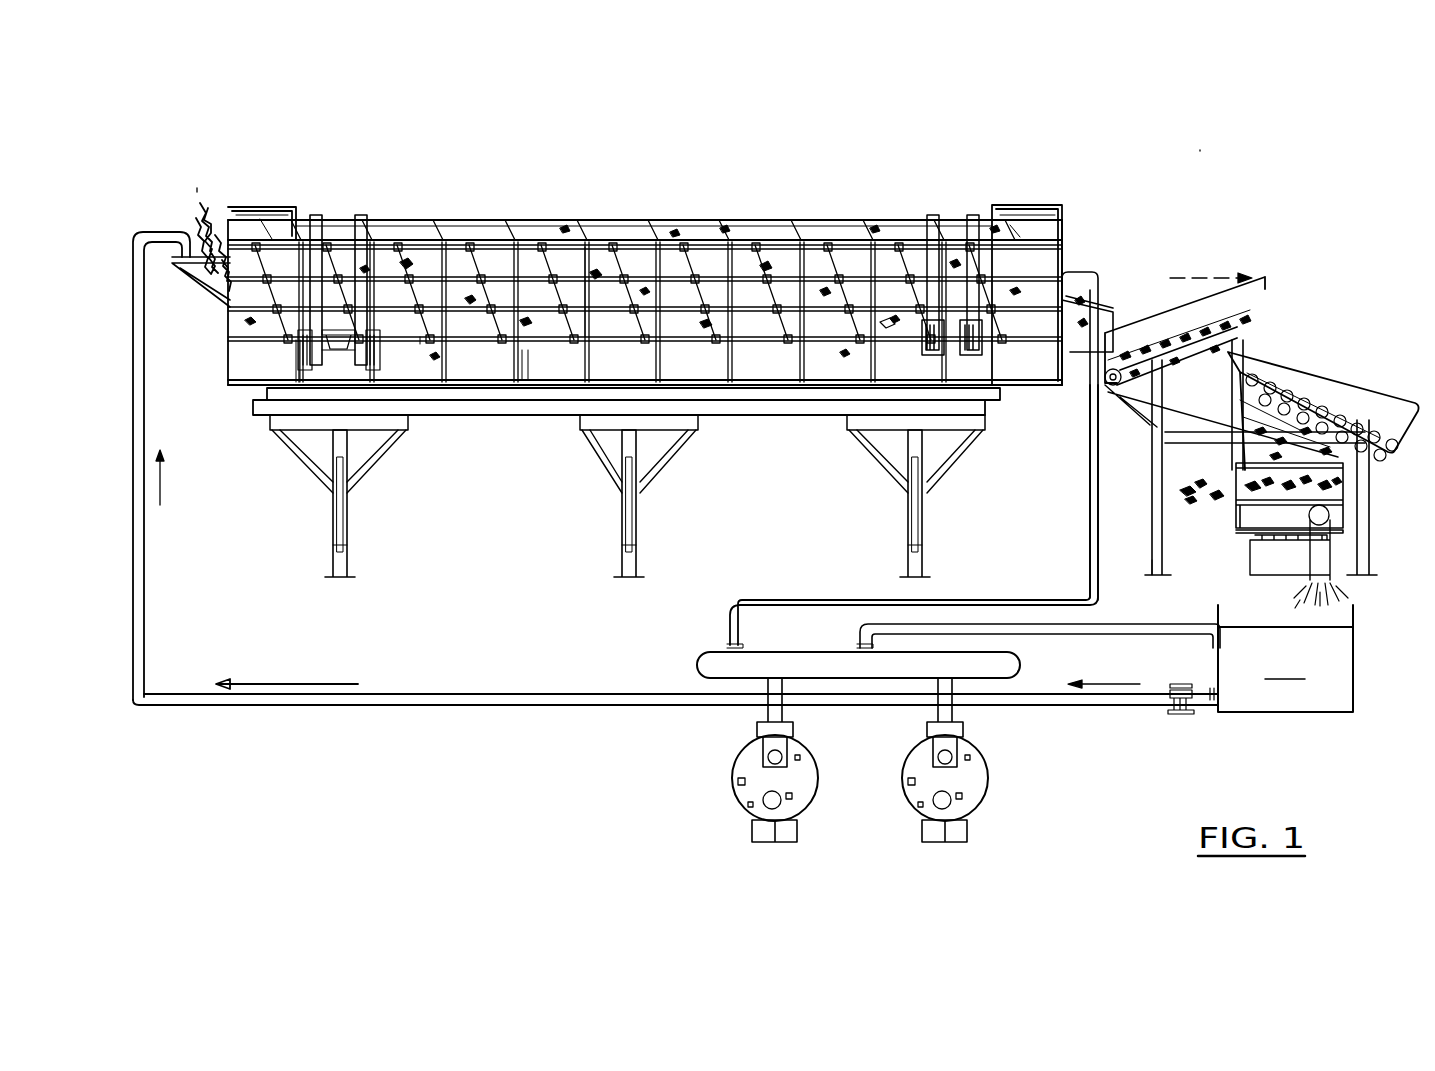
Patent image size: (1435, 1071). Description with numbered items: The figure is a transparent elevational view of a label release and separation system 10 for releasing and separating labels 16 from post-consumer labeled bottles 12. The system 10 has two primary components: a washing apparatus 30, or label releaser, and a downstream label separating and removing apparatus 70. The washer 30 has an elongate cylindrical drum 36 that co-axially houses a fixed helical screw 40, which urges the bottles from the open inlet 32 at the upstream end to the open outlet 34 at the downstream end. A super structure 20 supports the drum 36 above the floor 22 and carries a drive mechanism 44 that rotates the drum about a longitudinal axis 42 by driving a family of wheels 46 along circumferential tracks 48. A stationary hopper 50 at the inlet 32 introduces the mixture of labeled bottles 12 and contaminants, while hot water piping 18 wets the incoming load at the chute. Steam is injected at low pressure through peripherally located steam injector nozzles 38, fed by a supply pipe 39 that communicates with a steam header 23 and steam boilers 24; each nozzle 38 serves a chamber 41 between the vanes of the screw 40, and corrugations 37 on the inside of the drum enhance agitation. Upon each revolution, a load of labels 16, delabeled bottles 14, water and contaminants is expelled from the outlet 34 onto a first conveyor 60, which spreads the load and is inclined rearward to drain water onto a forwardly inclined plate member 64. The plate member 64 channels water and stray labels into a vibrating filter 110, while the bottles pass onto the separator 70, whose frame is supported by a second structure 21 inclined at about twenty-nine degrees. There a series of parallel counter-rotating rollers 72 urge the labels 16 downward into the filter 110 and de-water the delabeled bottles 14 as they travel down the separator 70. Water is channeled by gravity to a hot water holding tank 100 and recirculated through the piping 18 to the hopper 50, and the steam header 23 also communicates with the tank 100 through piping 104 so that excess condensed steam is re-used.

The label release and separation system 10 is at (1200, 150).
The labeled bottles 12 is at (197, 188).
The delabeled bottles 14 is at (1345, 380).
The labels 16 is at (780, 226).
The hot water piping 18 is at (133, 303).
The super structure 20 is at (268, 432).
The second structure 21 is at (1165, 558).
The floor 22 is at (350, 576).
The steam header 23 is at (991, 660).
The steam boilers 24 is at (985, 776).
The washing apparatus 30 is at (808, 352).
The inlet 32 is at (233, 188).
The outlet 34 is at (1072, 208).
The drum 36 is at (517, 222).
The corrugations 37 is at (588, 254).
The steam injector nozzles 38 is at (575, 343).
The supply pipe 39 is at (430, 348).
The helical screw 40 is at (465, 226).
The chamber 41 is at (645, 330).
The longitudinal axis 42 is at (1205, 277).
The drive mechanism 44 is at (300, 363).
The wheels 46 is at (332, 349).
The circumferential tracks 48 is at (365, 213).
The stationary hopper 50 is at (198, 298).
The first conveyor 60 is at (1167, 372).
The plate member 64 is at (1173, 403).
The label separating and removing apparatus 70 is at (1352, 282).
The rollers 72 is at (1391, 398).
The hot water holding tank 100 is at (1210, 659).
The piping 104 is at (1135, 628).
The vibrating filter 110 is at (1343, 505).